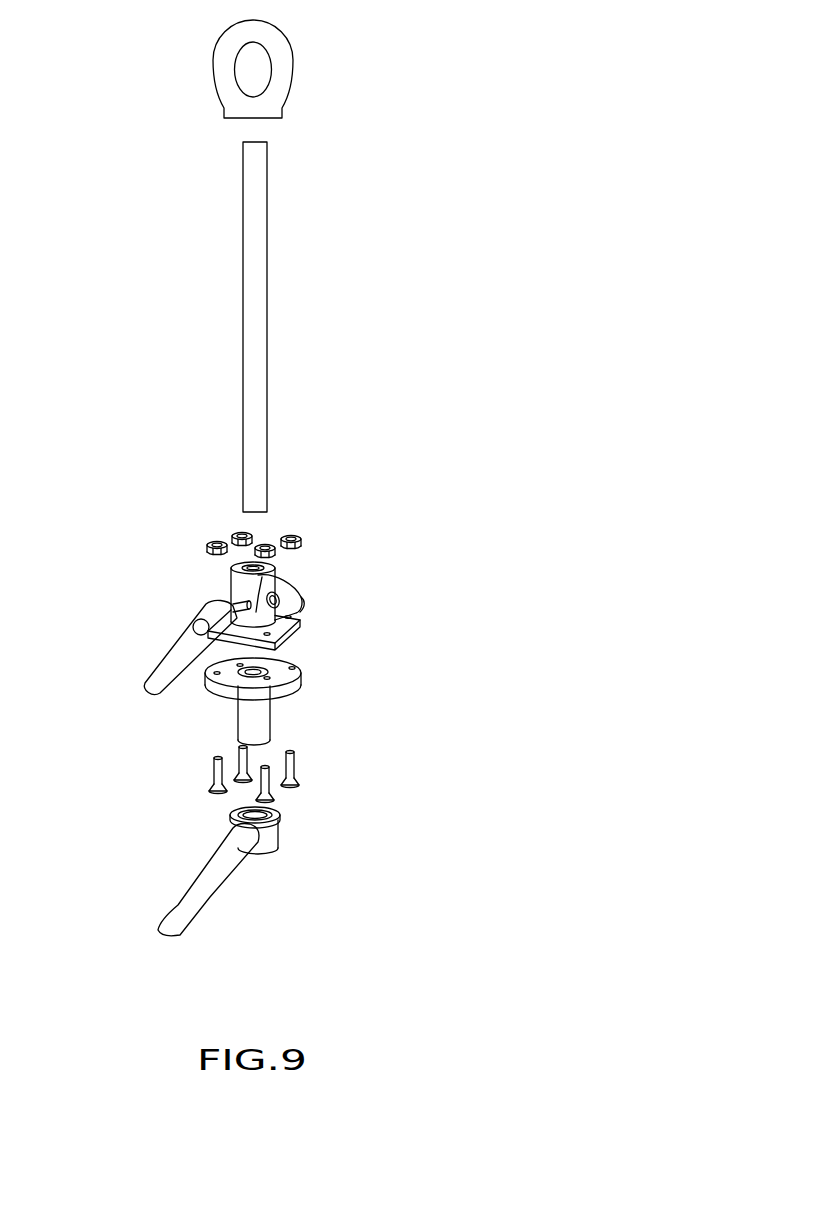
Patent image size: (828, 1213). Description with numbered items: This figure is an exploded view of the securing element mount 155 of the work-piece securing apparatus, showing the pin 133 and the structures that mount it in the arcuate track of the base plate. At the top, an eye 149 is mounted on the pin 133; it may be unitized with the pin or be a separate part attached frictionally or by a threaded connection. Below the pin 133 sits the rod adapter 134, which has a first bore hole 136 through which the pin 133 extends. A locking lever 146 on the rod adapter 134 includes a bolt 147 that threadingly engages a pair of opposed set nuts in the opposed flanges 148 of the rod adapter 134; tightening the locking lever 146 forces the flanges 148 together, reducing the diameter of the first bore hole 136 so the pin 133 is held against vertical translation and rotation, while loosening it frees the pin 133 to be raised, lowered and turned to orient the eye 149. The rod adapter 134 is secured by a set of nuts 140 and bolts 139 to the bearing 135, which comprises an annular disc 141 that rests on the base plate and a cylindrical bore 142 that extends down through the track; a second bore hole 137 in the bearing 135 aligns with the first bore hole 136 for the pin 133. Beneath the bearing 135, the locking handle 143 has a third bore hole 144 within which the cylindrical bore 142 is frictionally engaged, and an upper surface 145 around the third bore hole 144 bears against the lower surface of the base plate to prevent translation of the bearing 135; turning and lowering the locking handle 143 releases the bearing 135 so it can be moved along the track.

The eye 149 is at (285, 68).
The pin 133 is at (258, 343).
The nuts 140 is at (212, 543).
The rod adapter 134 is at (238, 583).
The first bore hole 136 is at (256, 568).
The opposed flanges 148 is at (303, 595).
The bolt 147 is at (240, 604).
The locking lever 146 is at (165, 668).
The annular disc 141 is at (297, 683).
The second bore hole 137 is at (258, 668).
The cylindrical bore 142 is at (263, 722).
The bolts 139 is at (292, 772).
The third bore hole 144 is at (267, 807).
The upper surface 145 is at (237, 815).
The locking handle 143 is at (210, 887).
The bearing 135 is at (460, 723).
The securing element mount 155 is at (522, 885).